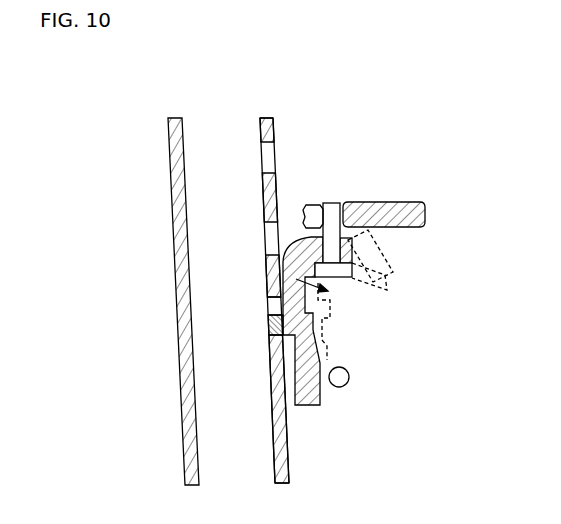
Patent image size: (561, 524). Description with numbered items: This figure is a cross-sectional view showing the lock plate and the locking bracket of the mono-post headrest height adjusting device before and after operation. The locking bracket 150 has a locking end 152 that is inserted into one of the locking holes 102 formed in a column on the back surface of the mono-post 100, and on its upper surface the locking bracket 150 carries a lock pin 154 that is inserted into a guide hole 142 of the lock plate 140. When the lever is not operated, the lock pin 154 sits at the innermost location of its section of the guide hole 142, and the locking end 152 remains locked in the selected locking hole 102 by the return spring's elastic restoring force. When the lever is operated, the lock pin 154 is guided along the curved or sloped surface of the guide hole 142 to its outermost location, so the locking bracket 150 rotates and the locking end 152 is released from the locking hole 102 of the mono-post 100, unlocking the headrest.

The mono-post 100 is at (166, 268).
The locking hole 102 is at (268, 314).
The lock plate 140 is at (406, 190).
The guide hole 142 is at (320, 204).
The locking bracket 150 is at (334, 347).
The locking end 152 is at (272, 323).
The lock pin 154 is at (336, 203).